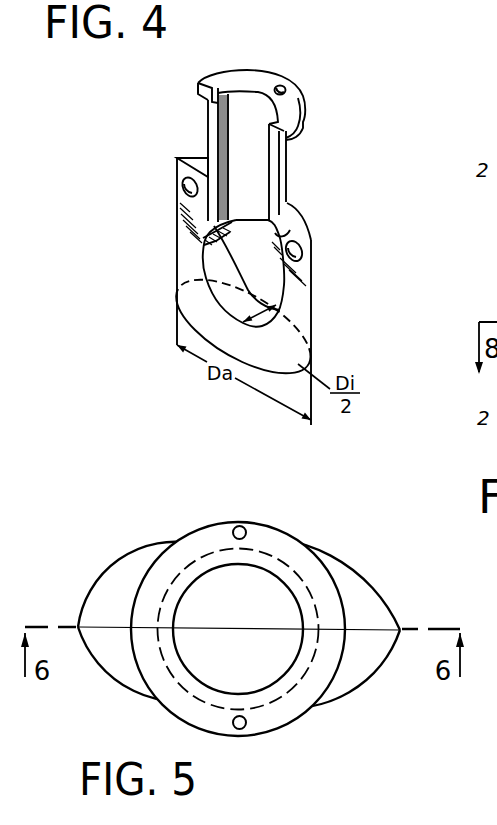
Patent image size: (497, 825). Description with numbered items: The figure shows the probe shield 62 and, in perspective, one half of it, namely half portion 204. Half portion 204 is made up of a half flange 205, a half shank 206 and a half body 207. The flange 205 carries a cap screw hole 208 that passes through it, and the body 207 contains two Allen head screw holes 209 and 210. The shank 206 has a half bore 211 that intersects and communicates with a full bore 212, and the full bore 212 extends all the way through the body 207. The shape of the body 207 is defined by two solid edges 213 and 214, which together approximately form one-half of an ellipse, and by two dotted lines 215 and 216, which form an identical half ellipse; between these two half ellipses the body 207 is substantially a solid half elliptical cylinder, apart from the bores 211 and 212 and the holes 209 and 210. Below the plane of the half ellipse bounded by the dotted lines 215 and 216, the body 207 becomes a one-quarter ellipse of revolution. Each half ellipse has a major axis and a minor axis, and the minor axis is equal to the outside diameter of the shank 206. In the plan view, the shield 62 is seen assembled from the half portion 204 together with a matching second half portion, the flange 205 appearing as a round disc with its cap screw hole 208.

In FIG. 5, the probe shield 62 is at (148, 544).
In FIG. 4, the half portion 204 is at (326, 108).
In FIG. 5, the half portion 204 is at (367, 572).
In FIG. 4, the half flange 205 is at (197, 86).
In FIG. 5, the half flange 205 is at (347, 612).
In FIG. 4, the half shank 206 is at (287, 172).
In FIG. 4, the half body 207 is at (167, 267).
In FIG. 4, the cap screw hole 208 is at (283, 87).
In FIG. 5, the cap screw hole 208 is at (246, 528).
In FIG. 4, the Allen head screw hole 209 is at (185, 192).
In FIG. 4, the Allen head screw hole 210 is at (302, 259).
In FIG. 4, the half bore 211 is at (224, 94).
In FIG. 4, the full bore 212 is at (203, 243).
In FIG. 4, the solid edge 213 is at (276, 234).
In FIG. 4, the solid edge 214 is at (203, 158).
In FIG. 4, the dotted line 215 is at (177, 303).
In FIG. 4, the dotted line 216 is at (296, 315).